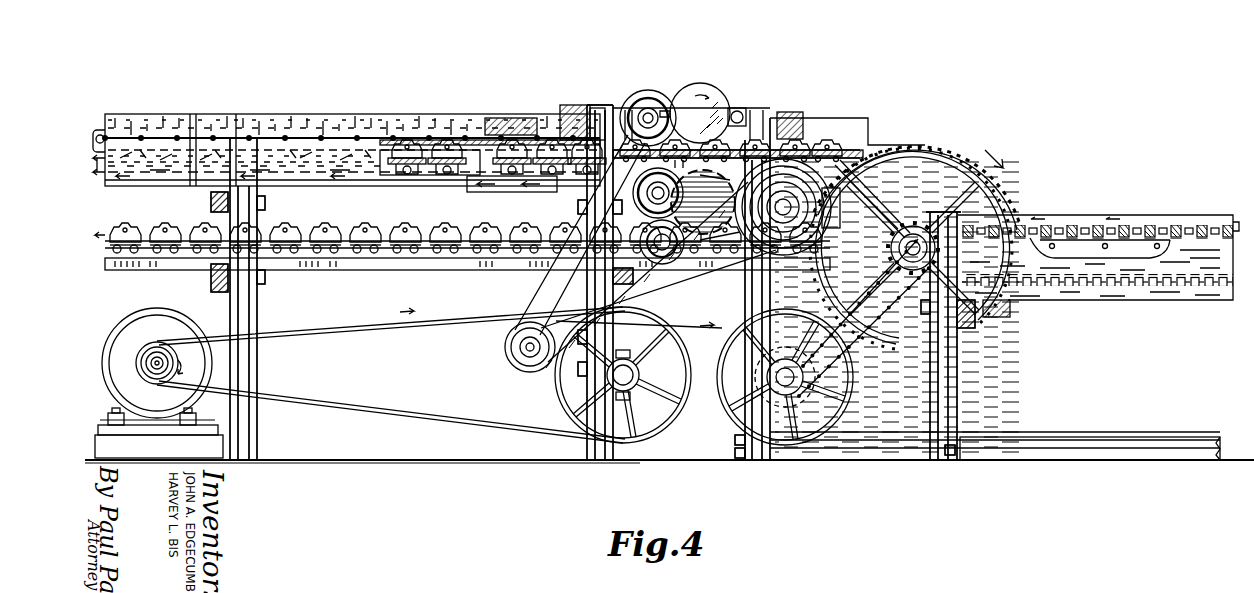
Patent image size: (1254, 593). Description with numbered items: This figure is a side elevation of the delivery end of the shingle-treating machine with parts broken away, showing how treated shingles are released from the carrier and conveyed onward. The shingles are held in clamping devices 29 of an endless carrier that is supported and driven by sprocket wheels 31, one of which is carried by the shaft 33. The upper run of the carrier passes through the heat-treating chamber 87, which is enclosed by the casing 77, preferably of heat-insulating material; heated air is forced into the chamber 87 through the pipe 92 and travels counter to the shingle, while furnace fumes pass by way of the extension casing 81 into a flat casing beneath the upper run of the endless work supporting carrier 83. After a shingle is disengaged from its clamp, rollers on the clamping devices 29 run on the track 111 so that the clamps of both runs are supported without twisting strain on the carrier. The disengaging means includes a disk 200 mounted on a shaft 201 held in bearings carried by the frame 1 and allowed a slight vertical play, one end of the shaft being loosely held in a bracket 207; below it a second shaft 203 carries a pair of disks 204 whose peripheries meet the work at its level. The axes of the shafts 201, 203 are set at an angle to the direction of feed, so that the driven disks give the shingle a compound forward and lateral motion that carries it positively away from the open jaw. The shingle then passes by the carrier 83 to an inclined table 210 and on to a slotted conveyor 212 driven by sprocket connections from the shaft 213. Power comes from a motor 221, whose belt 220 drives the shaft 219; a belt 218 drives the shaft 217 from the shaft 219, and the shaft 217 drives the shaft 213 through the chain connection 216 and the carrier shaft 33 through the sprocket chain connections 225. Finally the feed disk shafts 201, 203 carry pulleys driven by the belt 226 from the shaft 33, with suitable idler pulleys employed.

The frame 1 is at (258, 368).
The clamping device 29 is at (162, 137).
The sprocket wheel 31 is at (760, 155).
The shaft 33 is at (790, 200).
The casing 77 is at (332, 118).
The extension casing 81 is at (498, 191).
The endless work supporting carrier 83 is at (432, 170).
The heat-treating chamber 87 is at (530, 135).
The pipe 92 is at (462, 170).
The track 111 is at (372, 268).
The disk 200 is at (700, 88).
The shaft 201 is at (650, 112).
The shaft 203 is at (658, 193).
The disks 204 is at (740, 112).
The bracket 207 is at (735, 108).
The inclined table 210 is at (920, 180).
The slotted conveyor 212 is at (1078, 228).
The shaft 213 is at (927, 237).
The chain connection 216 is at (880, 376).
The shaft 217 is at (787, 386).
The belt 218 is at (715, 460).
The shaft 219 is at (634, 375).
The belt 220 is at (420, 422).
The motor 221 is at (127, 330).
The sprocket chain connections 225 is at (838, 284).
The belt 226 is at (665, 280).